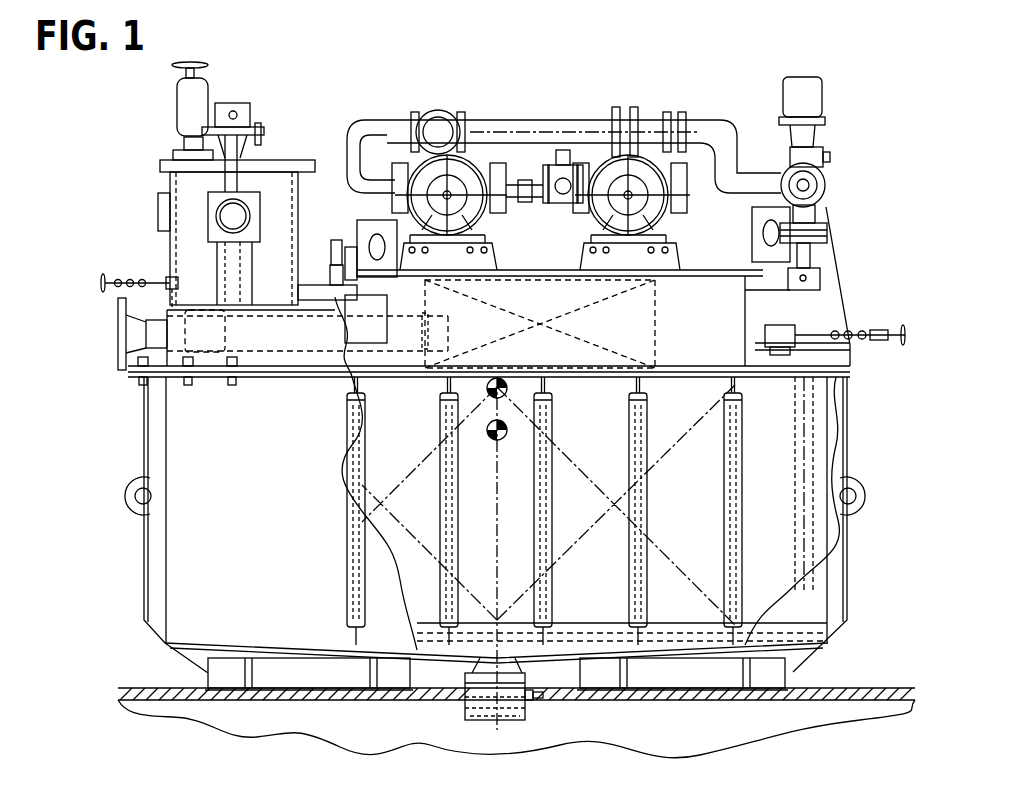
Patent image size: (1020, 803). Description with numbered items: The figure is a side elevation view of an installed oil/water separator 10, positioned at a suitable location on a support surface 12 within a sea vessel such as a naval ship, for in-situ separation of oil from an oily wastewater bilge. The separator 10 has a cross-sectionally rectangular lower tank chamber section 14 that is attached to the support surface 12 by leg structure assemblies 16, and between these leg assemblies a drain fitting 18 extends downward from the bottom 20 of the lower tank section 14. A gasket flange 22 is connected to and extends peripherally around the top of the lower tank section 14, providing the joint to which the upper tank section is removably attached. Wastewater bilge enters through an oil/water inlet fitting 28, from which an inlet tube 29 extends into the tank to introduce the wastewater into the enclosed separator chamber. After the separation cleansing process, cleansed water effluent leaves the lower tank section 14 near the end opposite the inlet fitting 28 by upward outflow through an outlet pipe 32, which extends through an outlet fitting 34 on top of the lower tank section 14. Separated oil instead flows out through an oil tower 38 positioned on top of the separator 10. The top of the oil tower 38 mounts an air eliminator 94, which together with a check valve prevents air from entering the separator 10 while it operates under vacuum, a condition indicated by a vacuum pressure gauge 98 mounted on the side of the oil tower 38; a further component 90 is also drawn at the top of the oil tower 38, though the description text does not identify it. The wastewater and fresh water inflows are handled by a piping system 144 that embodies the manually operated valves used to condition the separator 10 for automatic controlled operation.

The oil/water separator 10 is at (858, 624).
The support surface 12 is at (134, 686).
The lower tank chamber section 14 is at (181, 558).
The leg structure assemblies 16 is at (767, 680).
The drain fitting 18 is at (541, 703).
The bottom 20 is at (194, 650).
The gasket flange 22 is at (160, 373).
The oil/water inlet fitting 28 is at (116, 376).
The inlet tube 29 is at (294, 358).
The outlet pipe 32 is at (821, 402).
The outlet fitting 34 is at (842, 292).
The oil tower 38 is at (305, 226).
The actuator 90 is at (268, 121).
The air eliminator 94 is at (192, 90).
The vacuum pressure gauge 98 is at (218, 230).
The piping system 144 is at (520, 120).